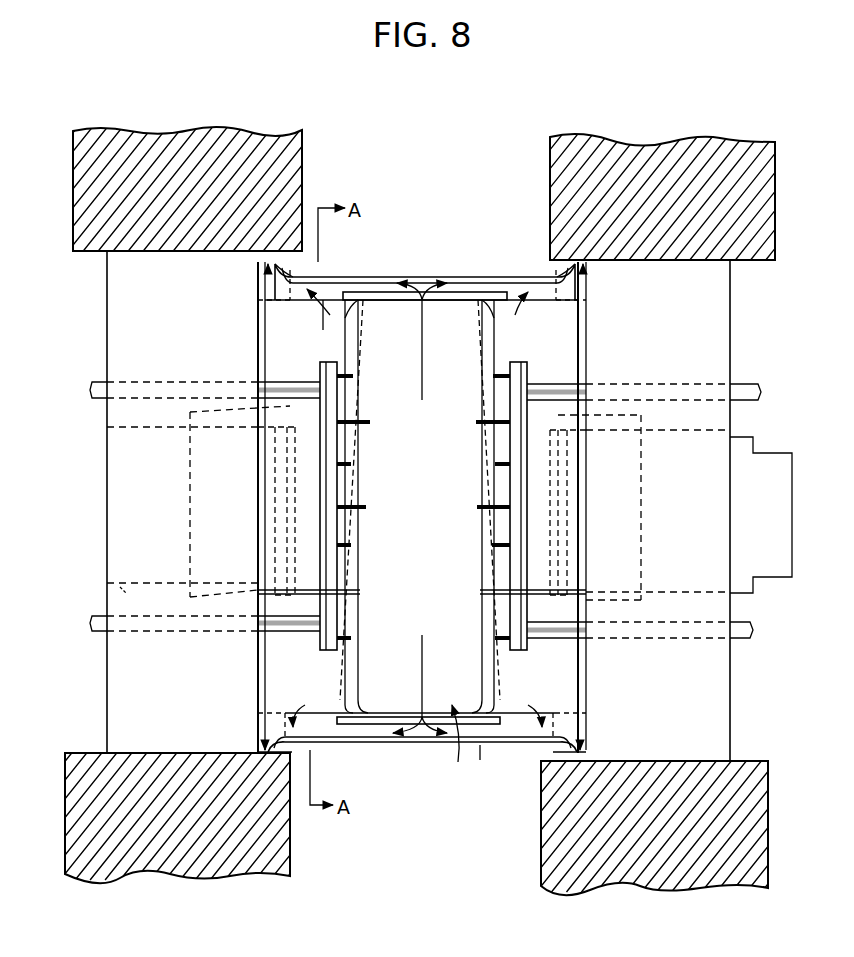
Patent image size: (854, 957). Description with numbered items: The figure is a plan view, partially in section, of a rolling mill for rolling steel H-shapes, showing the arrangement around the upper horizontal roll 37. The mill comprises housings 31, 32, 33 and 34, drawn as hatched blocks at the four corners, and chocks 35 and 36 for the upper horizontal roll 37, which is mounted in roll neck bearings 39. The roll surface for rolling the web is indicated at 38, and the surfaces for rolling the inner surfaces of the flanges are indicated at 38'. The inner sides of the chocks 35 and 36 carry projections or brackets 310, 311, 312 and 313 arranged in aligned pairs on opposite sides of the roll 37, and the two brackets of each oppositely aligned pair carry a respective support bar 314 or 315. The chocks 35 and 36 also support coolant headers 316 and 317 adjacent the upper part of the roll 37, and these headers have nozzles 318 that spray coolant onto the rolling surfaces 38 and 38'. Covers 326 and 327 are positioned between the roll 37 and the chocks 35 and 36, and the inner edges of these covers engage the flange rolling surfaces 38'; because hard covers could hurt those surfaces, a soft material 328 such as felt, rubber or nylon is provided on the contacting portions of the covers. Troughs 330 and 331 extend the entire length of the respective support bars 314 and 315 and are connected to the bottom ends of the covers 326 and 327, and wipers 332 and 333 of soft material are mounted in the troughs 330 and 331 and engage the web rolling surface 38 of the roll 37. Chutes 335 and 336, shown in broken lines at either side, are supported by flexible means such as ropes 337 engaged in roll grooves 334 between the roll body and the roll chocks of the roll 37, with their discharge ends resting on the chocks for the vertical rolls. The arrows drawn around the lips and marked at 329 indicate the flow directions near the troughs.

The housing 31 is at (556, 180).
The housing 32 is at (550, 855).
The housing 33 is at (302, 166).
The housing 34 is at (285, 850).
The chock 35 is at (730, 698).
The chock 36 is at (107, 688).
The upper horizontal roll 37 is at (431, 712).
The web rolling surface 38 is at (420, 495).
The flange rolling surfaces 38' is at (420, 506).
The roll neck bearings 39 is at (118, 590).
The bracket 310 is at (560, 276).
The bracket 311 is at (565, 745).
The bracket 312 is at (300, 270).
The bracket 313 is at (280, 743).
The support bar 314 is at (373, 292).
The support bar 315 is at (487, 745).
The coolant header 316 is at (526, 362).
The coolant header 317 is at (322, 362).
The nozzles 318 is at (490, 420).
The cover 326 is at (568, 363).
The cover 327 is at (277, 363).
The soft material 328 is at (302, 672).
The flow arrows 329 is at (417, 705).
The trough 330 is at (472, 280).
The trough 331 is at (360, 745).
The wiper 332 is at (422, 292).
The wiper 333 is at (400, 726).
The roll grooves 334 is at (422, 604).
The chute 335 is at (642, 517).
The chute 336 is at (189, 508).
The ropes 337 is at (272, 508).